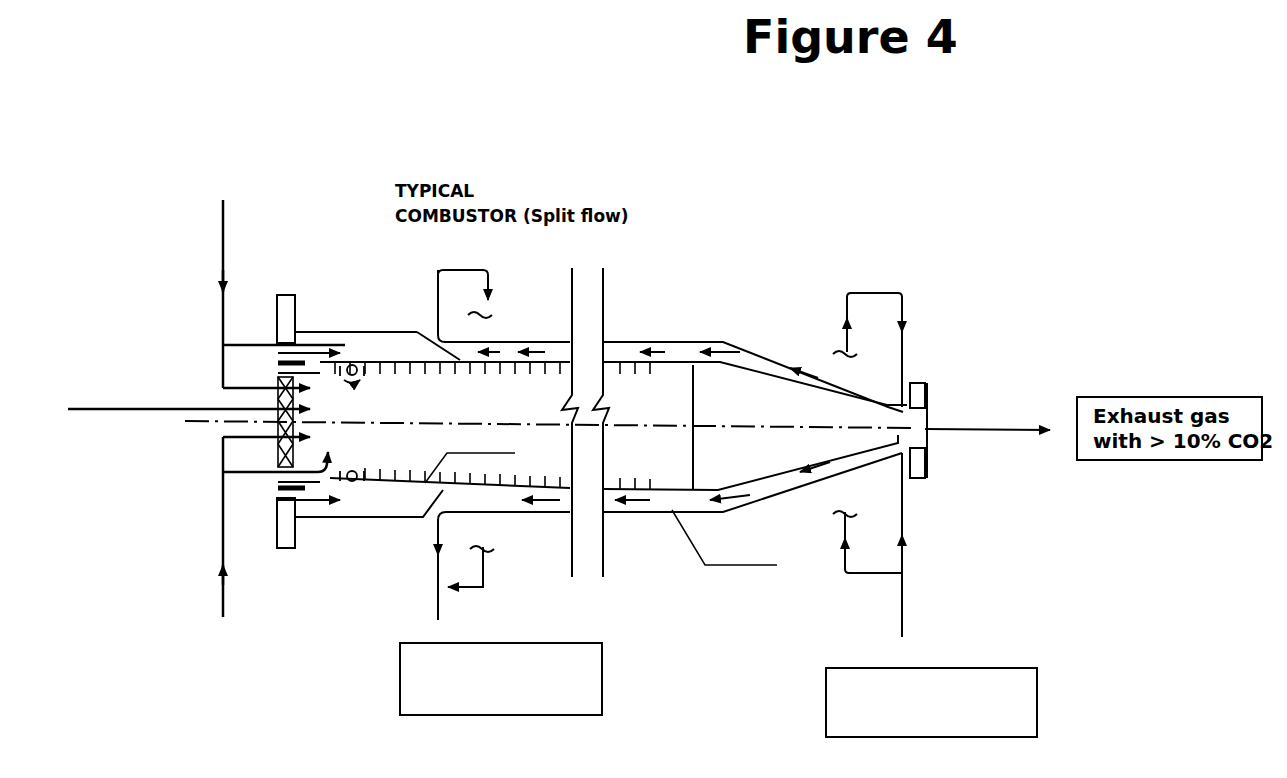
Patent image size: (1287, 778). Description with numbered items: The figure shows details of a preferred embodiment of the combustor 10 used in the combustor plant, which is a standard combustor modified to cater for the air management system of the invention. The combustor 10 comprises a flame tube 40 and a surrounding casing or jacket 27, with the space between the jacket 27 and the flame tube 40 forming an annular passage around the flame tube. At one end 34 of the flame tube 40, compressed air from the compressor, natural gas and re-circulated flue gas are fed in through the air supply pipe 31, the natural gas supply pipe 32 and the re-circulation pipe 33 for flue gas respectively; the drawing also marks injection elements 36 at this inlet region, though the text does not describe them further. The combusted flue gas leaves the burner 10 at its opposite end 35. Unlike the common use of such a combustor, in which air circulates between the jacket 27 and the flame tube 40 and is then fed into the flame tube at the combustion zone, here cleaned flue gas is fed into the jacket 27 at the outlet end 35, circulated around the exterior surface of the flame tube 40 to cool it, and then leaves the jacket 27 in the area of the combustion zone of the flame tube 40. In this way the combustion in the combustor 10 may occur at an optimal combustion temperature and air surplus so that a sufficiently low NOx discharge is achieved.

The combustor 10 is at (645, 326).
The jacket 27 is at (502, 497).
The air supply pipe 31 is at (223, 537).
The natural gas supply pipe 32 is at (157, 412).
The re-circulation pipe 33 is at (224, 218).
The end 34 is at (322, 300).
The opposite end 35 is at (943, 472).
The fuel injector swirler 36 is at (353, 365).
The flame tube 40 is at (662, 443).